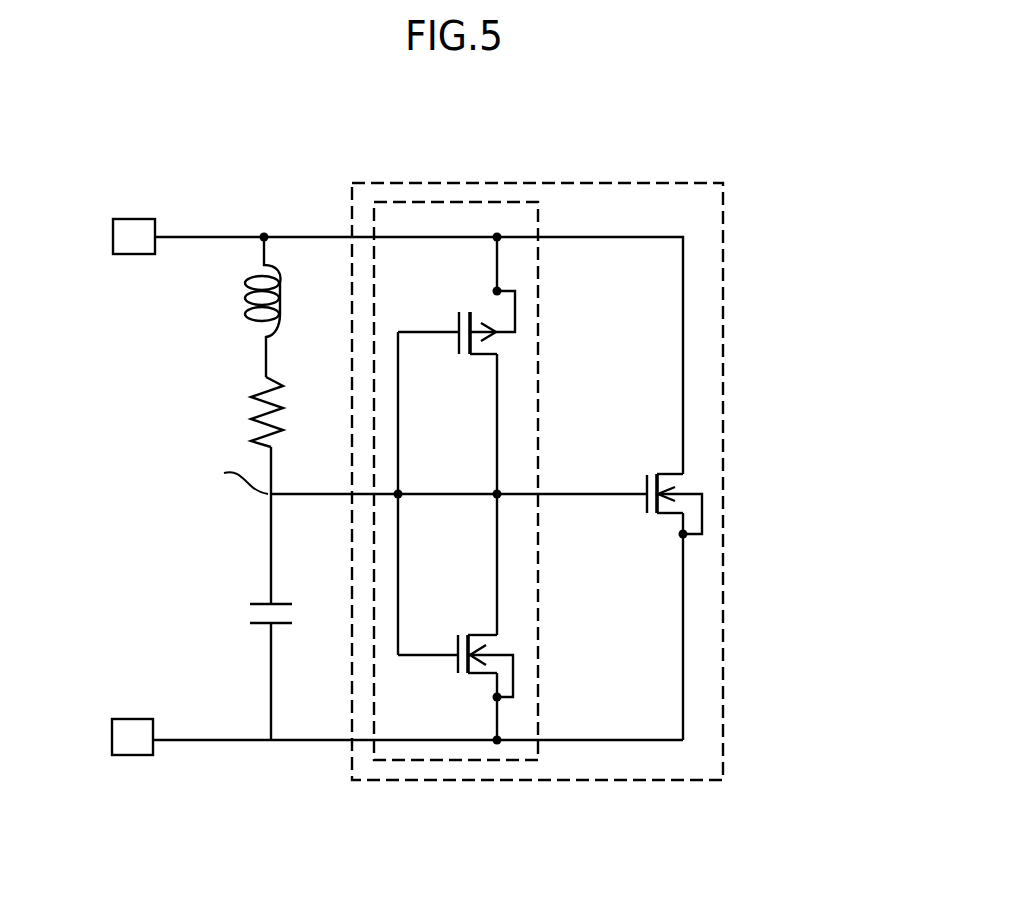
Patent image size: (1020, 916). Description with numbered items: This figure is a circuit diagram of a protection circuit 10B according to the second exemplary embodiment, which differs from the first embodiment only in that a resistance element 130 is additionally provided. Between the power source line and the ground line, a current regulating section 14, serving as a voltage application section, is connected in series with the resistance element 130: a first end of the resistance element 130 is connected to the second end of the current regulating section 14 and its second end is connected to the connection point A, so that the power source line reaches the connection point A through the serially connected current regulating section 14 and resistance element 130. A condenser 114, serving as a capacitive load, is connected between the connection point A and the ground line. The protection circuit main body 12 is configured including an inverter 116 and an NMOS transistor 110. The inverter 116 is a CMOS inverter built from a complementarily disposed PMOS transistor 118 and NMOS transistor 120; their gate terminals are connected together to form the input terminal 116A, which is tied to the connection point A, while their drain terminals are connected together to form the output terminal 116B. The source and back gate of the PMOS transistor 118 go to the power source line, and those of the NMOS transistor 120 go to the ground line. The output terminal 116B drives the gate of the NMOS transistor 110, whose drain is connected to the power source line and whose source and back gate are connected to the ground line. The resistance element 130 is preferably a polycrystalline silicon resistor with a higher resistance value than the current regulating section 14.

The protection circuit 10B is at (790, 140).
The protection circuit main body 12 is at (735, 280).
The current regulating section 14 is at (246, 279).
The NMOS transistor 110 is at (692, 478).
The condenser 114 is at (256, 604).
The inverter 116 is at (540, 663).
The input terminal 116A is at (398, 494).
The output terminal 116B is at (497, 494).
The PMOS transistor 118 is at (518, 320).
The NMOS transistor 120 is at (512, 640).
The resistance element 130 is at (254, 392).